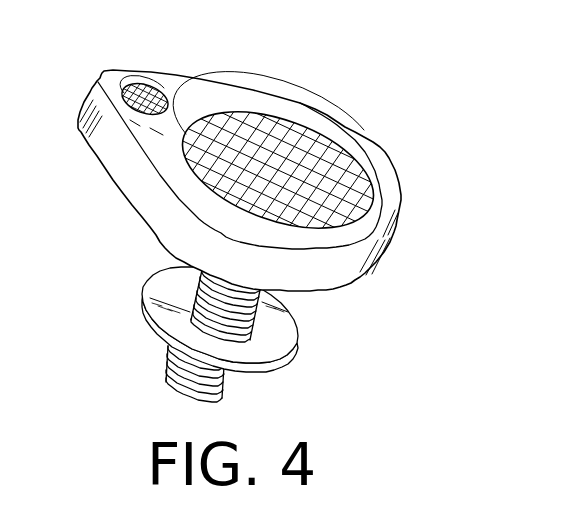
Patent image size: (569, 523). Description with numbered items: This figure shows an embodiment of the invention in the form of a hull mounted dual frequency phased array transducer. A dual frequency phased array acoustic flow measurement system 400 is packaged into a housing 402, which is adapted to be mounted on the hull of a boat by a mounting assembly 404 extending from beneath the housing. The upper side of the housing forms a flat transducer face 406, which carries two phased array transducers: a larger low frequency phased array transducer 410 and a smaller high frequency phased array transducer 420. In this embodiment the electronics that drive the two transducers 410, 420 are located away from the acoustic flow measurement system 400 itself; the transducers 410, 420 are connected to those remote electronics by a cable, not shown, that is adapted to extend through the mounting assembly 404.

The dual frequency phased array acoustic flow measurement system 400 is at (285, 205).
The housing 402 is at (251, 170).
The mounting assembly 404 is at (304, 338).
The flat transducer face 406 is at (192, 101).
The low frequency phased array transducer 410 is at (283, 157).
The high frequency phased array transducer 420 is at (130, 86).